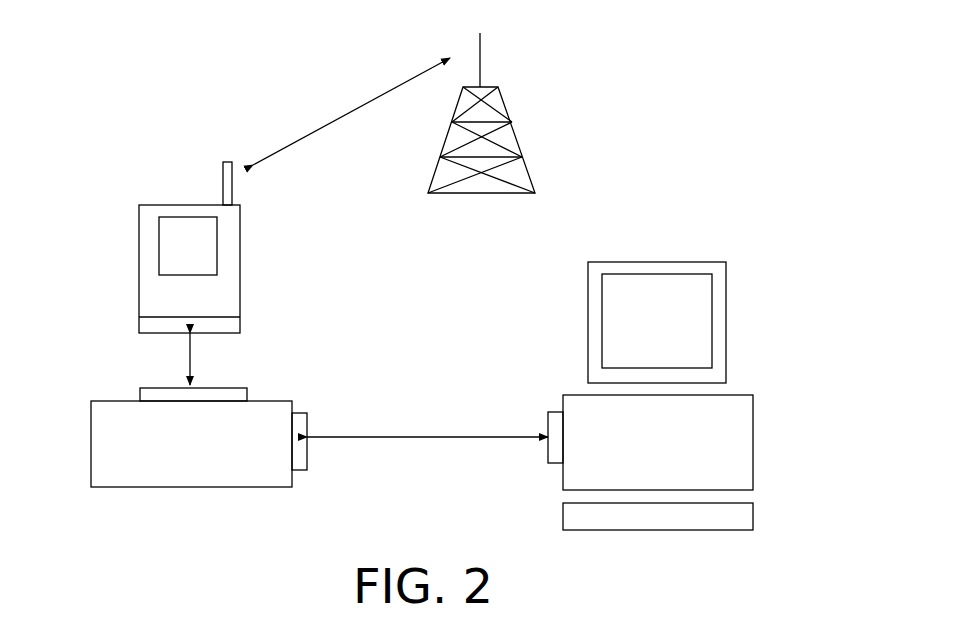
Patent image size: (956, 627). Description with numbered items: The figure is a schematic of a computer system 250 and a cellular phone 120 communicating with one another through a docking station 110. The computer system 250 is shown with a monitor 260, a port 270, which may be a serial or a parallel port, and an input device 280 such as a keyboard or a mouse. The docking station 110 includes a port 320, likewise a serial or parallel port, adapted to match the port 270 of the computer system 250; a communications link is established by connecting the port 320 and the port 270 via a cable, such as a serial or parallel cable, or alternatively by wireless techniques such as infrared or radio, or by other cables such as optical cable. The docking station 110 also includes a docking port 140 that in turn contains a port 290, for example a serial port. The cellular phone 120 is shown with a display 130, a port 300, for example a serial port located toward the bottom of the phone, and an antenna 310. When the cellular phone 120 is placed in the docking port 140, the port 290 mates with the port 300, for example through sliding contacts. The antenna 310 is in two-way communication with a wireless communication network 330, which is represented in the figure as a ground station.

The docking station 110 is at (100, 445).
The cellular phone 120 is at (145, 282).
The display 130 is at (177, 227).
The docking port 140 is at (241, 381).
The computer system 250 is at (652, 396).
The monitor 260 is at (595, 313).
The port 270 is at (557, 412).
The input device 280 is at (570, 520).
The port 290 is at (153, 392).
The port 300 is at (240, 322).
The antenna 310 is at (225, 162).
The port 320 is at (302, 423).
The wireless communication network 330 is at (515, 170).